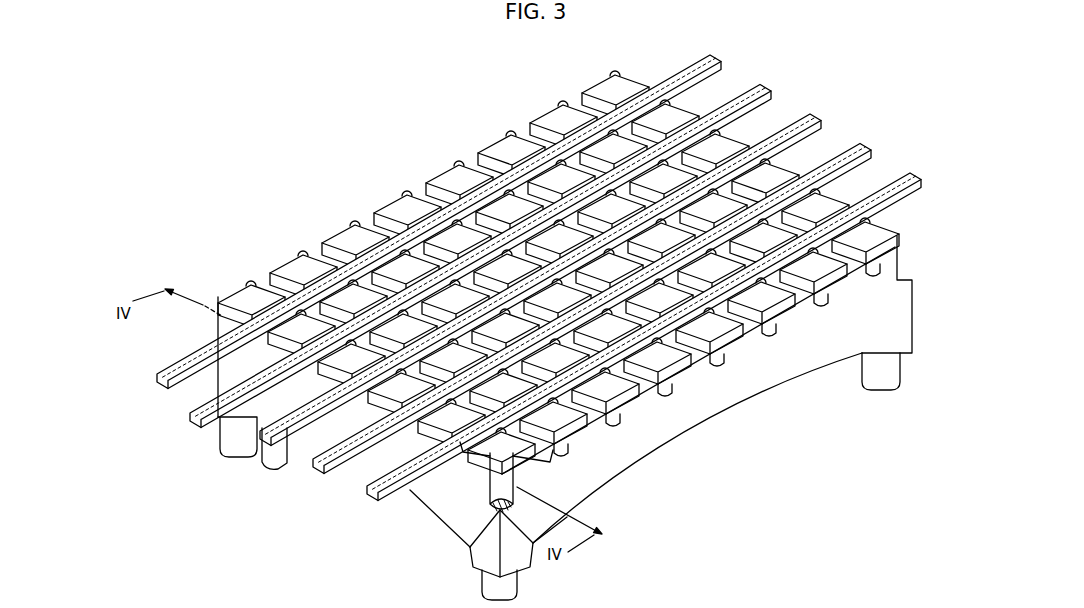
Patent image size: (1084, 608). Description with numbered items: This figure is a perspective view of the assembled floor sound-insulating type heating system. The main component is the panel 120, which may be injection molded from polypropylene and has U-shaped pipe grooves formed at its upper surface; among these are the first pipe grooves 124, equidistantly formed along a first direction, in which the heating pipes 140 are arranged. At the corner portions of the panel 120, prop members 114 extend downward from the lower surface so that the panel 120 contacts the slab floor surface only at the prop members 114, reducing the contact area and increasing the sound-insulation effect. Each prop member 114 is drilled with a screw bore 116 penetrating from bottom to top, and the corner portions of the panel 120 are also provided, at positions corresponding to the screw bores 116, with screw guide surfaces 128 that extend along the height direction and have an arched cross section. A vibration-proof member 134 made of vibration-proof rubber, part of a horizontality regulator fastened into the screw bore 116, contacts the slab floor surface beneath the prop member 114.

The panel 120 is at (392, 163).
The first pipe grooves 124 is at (214, 328).
The heating pipes 140 is at (316, 466).
The screw guide surfaces 128 is at (490, 502).
The screw bore 116 is at (480, 500).
The prop members 114 is at (477, 570).
The vibration-proof member 134 is at (519, 588).